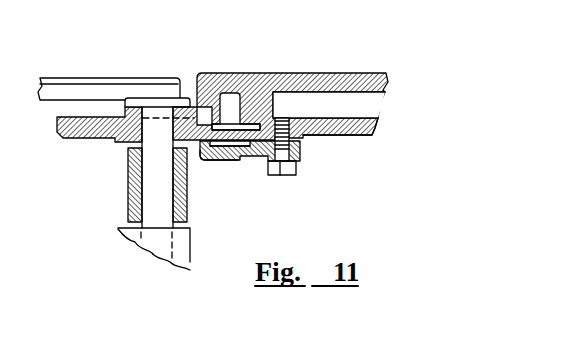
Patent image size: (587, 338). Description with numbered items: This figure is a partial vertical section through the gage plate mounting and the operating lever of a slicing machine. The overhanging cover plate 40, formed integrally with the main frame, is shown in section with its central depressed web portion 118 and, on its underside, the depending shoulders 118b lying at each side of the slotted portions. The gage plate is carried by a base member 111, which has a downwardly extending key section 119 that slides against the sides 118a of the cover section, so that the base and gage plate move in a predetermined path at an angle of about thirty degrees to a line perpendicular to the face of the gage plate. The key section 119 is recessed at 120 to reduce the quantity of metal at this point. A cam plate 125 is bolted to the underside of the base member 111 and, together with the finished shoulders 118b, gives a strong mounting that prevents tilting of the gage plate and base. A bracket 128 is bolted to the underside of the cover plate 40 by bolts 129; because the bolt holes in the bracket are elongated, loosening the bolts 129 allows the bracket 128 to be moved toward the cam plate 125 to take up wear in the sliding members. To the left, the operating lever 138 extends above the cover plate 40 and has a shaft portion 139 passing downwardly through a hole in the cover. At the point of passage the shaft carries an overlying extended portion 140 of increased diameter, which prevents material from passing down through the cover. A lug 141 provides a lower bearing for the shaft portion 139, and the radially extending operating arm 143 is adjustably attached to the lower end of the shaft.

The cover plate 40 is at (352, 136).
The base member 111 is at (197, 73).
The central depressed web portion 118 is at (250, 156).
The sides of the cover section 118a is at (232, 110).
The depending shoulders 118b is at (198, 152).
The key section 119 is at (274, 113).
The recess 120 is at (233, 104).
The cam plate 125 is at (206, 163).
The bracket 128 is at (300, 158).
The bolts 129 is at (295, 168).
The operating lever 138 is at (57, 80).
The shaft portion 139 is at (148, 179).
The overlying extended portion 140 is at (141, 98).
The lug 141 is at (187, 262).
The operating arm 143 is at (128, 205).